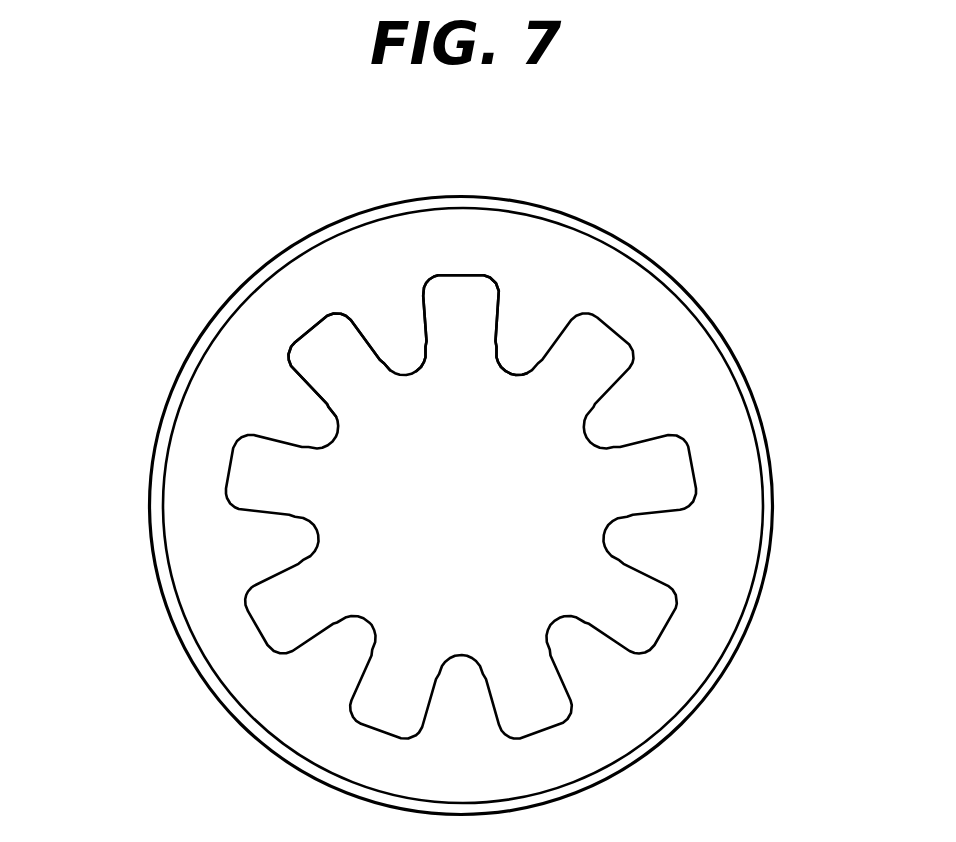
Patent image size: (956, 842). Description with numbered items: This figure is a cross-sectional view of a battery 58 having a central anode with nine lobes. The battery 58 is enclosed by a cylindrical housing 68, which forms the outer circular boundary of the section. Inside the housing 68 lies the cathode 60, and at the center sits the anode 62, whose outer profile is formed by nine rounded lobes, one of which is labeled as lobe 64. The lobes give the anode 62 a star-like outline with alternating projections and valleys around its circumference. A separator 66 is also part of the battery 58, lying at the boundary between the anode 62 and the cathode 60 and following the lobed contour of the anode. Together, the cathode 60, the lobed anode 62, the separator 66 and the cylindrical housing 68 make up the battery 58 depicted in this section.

The battery 58 is at (724, 242).
The cathode 60 is at (710, 620).
The anode 62 is at (530, 480).
The lobe 64 is at (456, 302).
The separator 66 is at (307, 335).
The cylindrical housing 68 is at (168, 400).